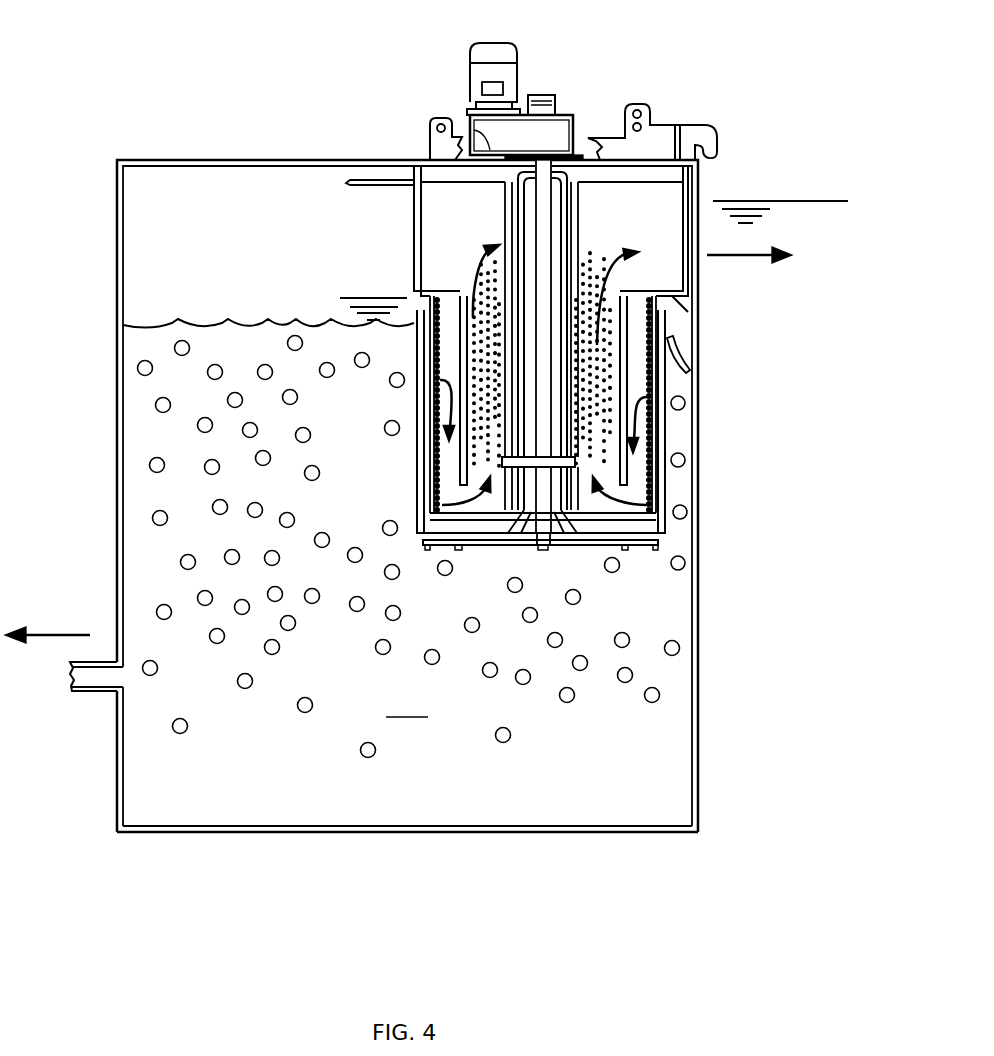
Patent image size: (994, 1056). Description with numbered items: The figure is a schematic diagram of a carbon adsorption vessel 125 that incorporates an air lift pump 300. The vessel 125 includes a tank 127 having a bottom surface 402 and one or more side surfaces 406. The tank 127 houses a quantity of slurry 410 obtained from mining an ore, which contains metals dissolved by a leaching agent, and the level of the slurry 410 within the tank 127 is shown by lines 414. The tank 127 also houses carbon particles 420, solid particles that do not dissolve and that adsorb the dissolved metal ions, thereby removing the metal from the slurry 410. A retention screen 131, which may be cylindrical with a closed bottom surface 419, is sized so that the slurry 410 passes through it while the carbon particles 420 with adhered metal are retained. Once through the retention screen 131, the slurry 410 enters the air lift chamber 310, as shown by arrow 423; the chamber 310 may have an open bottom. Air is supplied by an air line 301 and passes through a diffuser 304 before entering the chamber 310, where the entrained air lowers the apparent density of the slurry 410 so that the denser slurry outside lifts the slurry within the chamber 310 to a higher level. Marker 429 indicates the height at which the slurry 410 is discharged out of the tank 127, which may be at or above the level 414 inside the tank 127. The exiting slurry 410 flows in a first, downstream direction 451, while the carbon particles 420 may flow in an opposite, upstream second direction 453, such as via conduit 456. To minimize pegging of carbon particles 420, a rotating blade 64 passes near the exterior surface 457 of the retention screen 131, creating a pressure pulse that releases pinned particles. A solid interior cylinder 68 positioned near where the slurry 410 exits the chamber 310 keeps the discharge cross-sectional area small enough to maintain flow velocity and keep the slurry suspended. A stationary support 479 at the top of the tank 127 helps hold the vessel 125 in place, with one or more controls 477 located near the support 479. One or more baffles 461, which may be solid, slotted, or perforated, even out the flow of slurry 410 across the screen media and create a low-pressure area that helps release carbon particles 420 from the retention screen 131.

The carbon adsorption vessel 125 is at (436, 459).
The side surfaces 406 is at (698, 718).
The bottom surface 402 is at (415, 832).
The conduit 456 is at (92, 692).
The second direction 453 is at (40, 632).
The slurry 410 is at (160, 322).
The slurry level lines 414 is at (372, 297).
The discharge height marker 429 is at (803, 201).
The first direction 451 is at (738, 258).
The air line 301 is at (375, 183).
The rotating blade 64 is at (417, 458).
The arrow 423 is at (652, 423).
The closed bottom surface 419 is at (595, 520).
The diffuser 304 is at (515, 467).
The solid interior cylinder 68 is at (518, 228).
The air lift pump 300 is at (574, 446).
The retention screen 131 is at (437, 410).
The exterior surface 457 is at (652, 482).
The air lift chamber 310 is at (472, 455).
The controls 477 is at (540, 96).
The stationary support 479 is at (660, 125).
The baffle 461 is at (690, 352).
The tank 127 is at (407, 705).
The carbon particles 420 is at (152, 515).